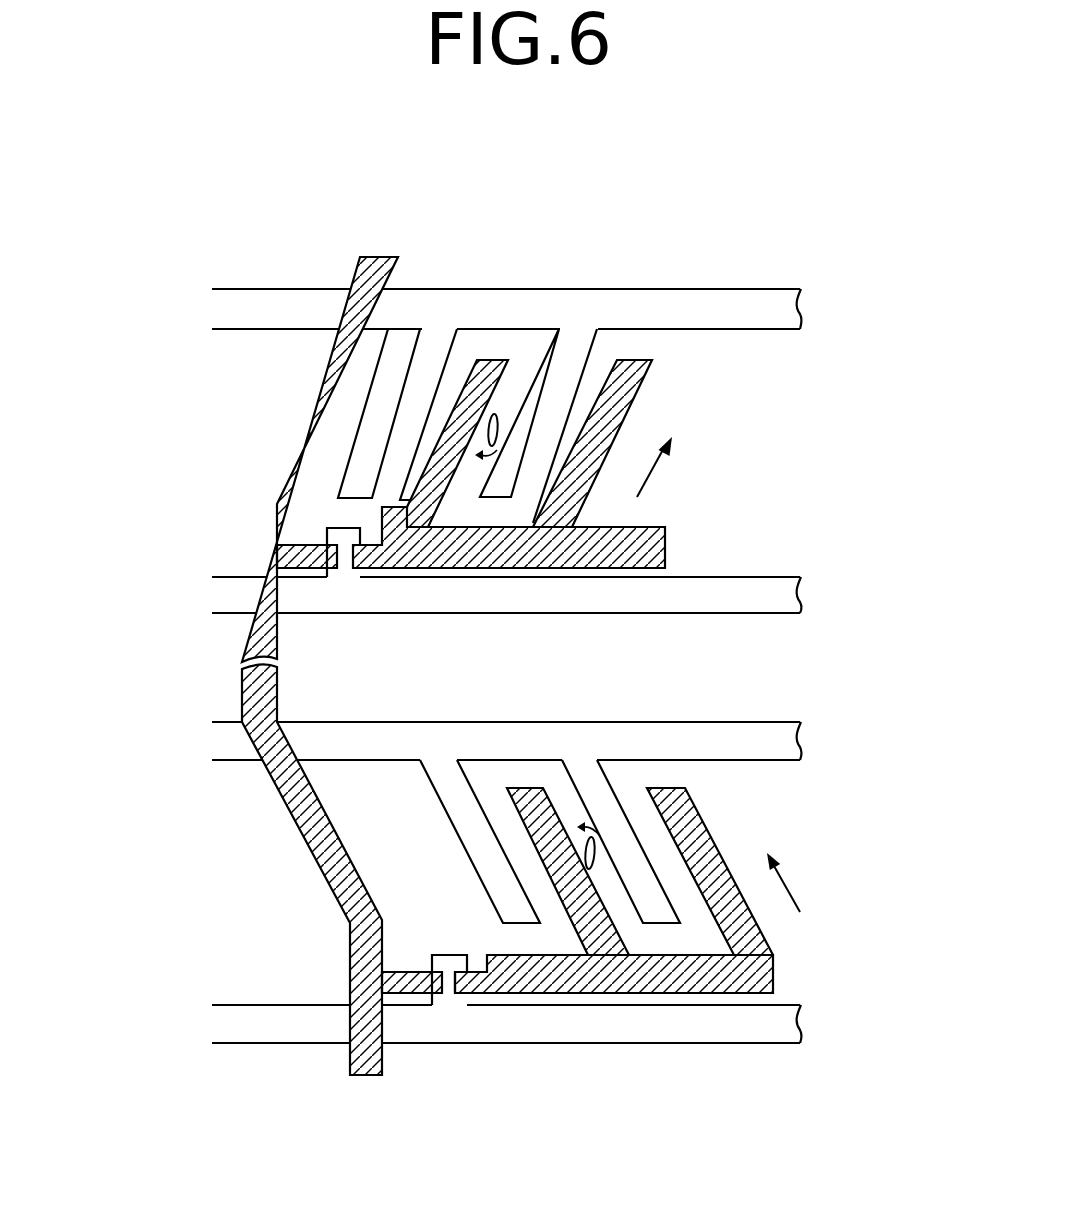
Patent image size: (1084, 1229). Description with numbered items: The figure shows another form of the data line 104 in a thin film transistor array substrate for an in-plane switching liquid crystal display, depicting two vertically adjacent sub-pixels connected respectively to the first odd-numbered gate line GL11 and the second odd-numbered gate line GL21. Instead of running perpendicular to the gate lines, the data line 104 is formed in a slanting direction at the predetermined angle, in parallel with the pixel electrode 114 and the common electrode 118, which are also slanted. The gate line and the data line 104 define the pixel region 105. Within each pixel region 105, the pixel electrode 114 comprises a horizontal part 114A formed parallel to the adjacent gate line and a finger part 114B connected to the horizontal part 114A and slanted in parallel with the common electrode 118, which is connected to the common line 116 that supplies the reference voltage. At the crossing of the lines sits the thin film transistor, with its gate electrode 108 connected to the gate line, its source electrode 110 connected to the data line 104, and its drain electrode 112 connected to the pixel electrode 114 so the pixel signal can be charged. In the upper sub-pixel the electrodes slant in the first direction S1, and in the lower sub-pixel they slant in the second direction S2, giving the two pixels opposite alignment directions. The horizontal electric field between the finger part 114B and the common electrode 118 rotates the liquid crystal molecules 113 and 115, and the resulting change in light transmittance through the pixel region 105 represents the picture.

The data line 104 is at (305, 858).
The pixel region 105 is at (520, 851).
The gate electrode 108 is at (449, 998).
The source electrode 110 is at (437, 985).
The drain electrode 112 is at (468, 997).
The liquid crystal molecule 113 is at (490, 413).
The pixel electrode 114 is at (583, 359).
The horizontal part 114A is at (603, 537).
The finger part 114B is at (633, 358).
The liquid crystal molecule 115 is at (592, 869).
The common line 116 is at (541, 289).
The common electrode 118 is at (407, 368).
The first odd-numbered gate line GL11 is at (212, 598).
The second odd-numbered gate line GL21 is at (212, 1027).
The first direction S1 is at (677, 472).
The second direction S2 is at (812, 888).